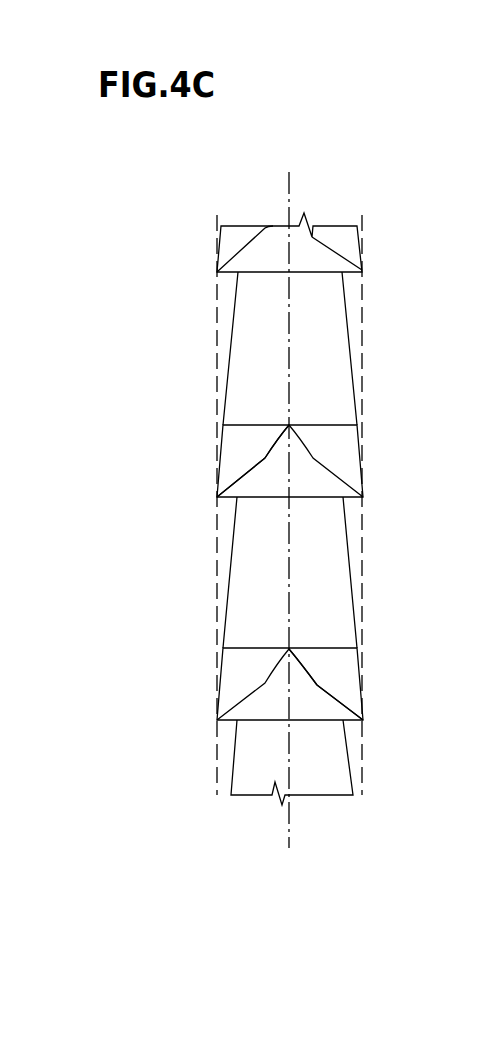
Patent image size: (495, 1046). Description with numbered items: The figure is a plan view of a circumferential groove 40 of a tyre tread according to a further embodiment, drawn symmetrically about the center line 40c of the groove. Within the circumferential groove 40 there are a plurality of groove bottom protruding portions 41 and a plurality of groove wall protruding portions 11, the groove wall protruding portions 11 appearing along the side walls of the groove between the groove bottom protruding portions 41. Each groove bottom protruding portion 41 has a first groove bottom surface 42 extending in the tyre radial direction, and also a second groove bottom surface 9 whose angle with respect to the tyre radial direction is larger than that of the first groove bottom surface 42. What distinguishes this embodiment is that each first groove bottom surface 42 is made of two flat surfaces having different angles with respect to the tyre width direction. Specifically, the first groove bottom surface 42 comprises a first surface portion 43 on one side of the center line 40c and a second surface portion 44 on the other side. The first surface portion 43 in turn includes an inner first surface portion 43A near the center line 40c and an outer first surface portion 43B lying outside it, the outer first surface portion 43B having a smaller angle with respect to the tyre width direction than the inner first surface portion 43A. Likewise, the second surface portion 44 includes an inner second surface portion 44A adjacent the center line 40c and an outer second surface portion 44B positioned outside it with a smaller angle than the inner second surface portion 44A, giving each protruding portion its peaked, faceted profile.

The circumferential groove 40 is at (375, 205).
The center line 40c is at (286, 497).
The groove bottom protruding portion 41 is at (256, 400).
The groove wall protruding portion 11 is at (352, 313).
The second groove bottom surface 9 is at (322, 623).
The first groove bottom surface 42 is at (290, 572).
The first surface portion 43 is at (150, 478).
The inner first surface portion 43A is at (277, 445).
The outer first surface portion 43B is at (253, 484).
The second surface portion 44 is at (150, 757).
The inner second surface portion 44A is at (302, 663).
The outer second surface portion 44B is at (332, 698).